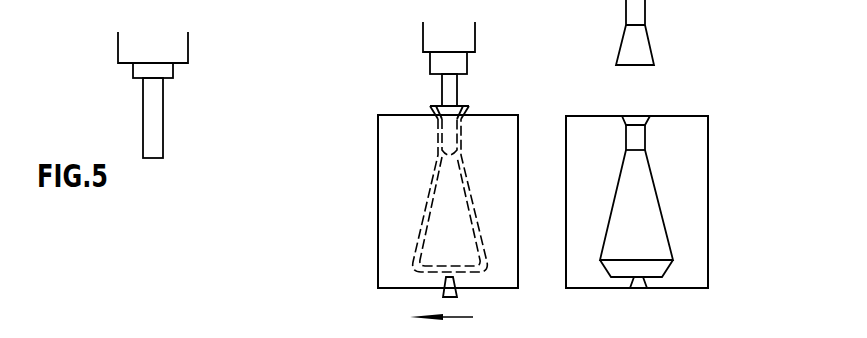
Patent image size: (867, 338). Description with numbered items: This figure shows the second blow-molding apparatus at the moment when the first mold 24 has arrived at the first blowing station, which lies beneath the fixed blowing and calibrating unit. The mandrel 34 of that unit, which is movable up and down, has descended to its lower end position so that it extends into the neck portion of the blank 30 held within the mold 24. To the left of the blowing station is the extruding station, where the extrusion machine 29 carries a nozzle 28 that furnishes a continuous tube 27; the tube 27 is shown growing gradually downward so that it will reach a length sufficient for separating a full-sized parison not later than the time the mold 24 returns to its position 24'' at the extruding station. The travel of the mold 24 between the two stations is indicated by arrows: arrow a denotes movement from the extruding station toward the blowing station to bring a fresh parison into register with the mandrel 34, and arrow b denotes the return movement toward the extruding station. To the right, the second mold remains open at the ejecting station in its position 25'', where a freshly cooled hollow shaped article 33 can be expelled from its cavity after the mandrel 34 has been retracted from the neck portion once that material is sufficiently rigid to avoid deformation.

The first mold 24 is at (420, 201).
The position of the first mold at the extruding station 24'' is at (57, 11).
The position of the second mold at the ejecting station 25'' is at (670, 202).
The continuous tube 27 is at (157, 127).
The nozzle 28 is at (166, 72).
The extrusion machine 29 is at (185, 60).
The blank 30 is at (430, 218).
The hollow shaped article 33 is at (643, 45).
The mandrel 34 is at (450, 88).
The arrow a is at (187, 3).
The arrow b is at (452, 320).